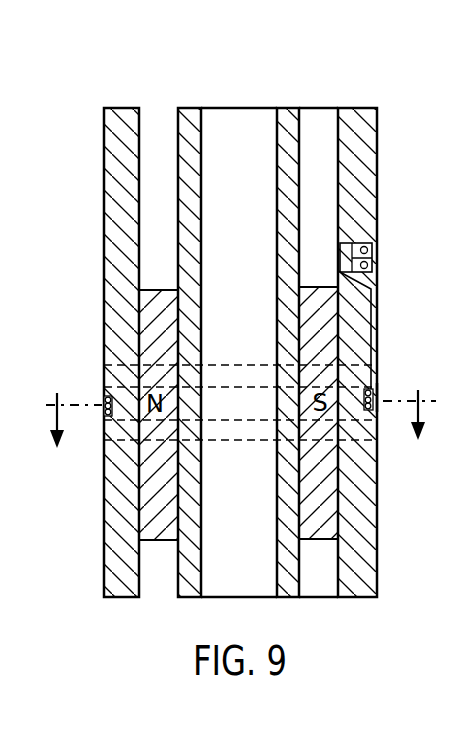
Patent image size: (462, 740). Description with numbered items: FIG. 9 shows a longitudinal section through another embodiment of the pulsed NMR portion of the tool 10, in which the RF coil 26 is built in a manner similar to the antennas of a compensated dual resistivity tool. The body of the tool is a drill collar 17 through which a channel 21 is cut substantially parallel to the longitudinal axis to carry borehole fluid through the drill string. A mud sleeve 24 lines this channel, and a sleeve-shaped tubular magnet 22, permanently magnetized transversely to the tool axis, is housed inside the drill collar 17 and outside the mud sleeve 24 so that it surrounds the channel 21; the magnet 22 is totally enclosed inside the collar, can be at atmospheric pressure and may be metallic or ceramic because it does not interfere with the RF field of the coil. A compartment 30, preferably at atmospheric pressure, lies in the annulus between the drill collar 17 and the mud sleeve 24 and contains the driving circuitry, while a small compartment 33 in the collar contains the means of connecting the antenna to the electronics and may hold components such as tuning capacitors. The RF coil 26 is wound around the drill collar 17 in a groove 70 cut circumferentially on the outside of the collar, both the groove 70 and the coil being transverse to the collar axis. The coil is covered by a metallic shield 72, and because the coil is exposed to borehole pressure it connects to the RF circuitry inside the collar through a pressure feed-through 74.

The tool 10 is at (242, 440).
The drill collar 17 is at (354, 176).
The channel 21 is at (258, 132).
The tubular magnet 22 is at (322, 334).
The mud sleeve 24 is at (290, 131).
The RF coil 26 is at (376, 399).
The compartment 30 is at (330, 142).
The small compartment 33 is at (362, 255).
The groove 70 is at (369, 402).
The metallic shield 72 is at (377, 394).
The pressure feed-through 74 is at (375, 282).